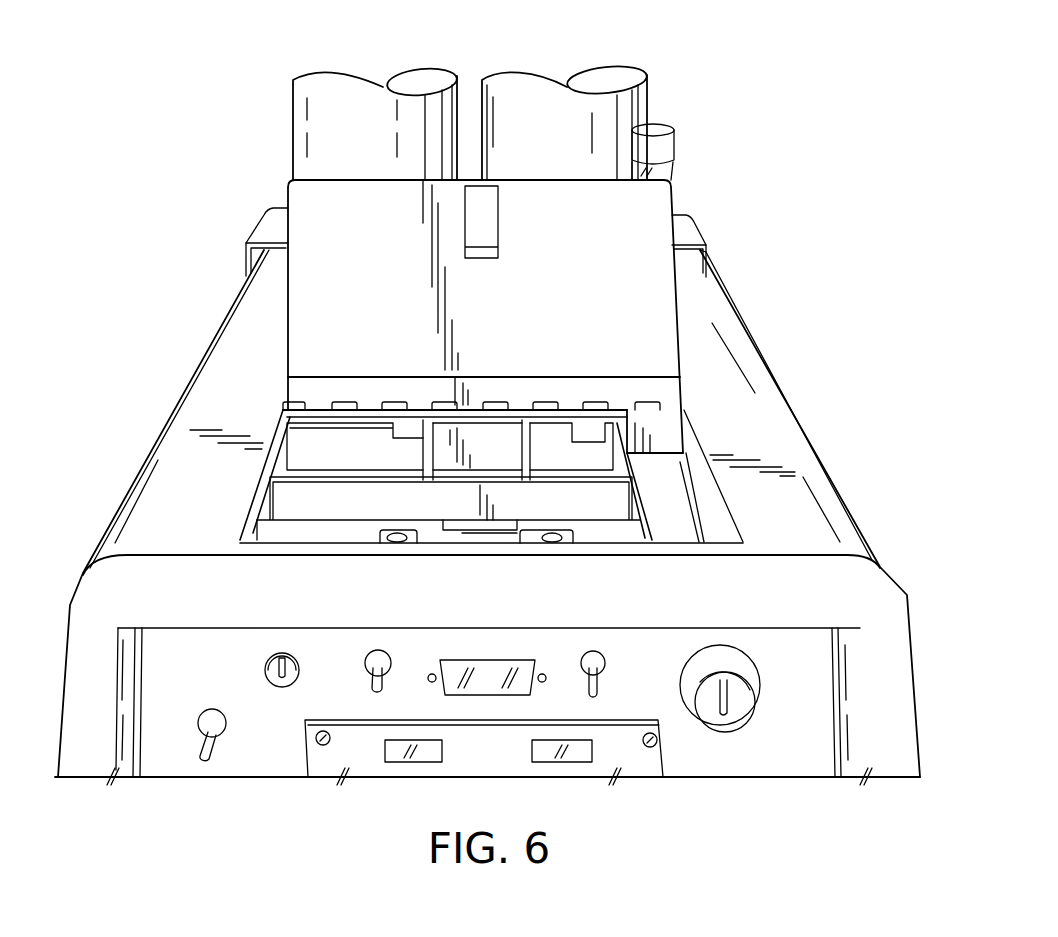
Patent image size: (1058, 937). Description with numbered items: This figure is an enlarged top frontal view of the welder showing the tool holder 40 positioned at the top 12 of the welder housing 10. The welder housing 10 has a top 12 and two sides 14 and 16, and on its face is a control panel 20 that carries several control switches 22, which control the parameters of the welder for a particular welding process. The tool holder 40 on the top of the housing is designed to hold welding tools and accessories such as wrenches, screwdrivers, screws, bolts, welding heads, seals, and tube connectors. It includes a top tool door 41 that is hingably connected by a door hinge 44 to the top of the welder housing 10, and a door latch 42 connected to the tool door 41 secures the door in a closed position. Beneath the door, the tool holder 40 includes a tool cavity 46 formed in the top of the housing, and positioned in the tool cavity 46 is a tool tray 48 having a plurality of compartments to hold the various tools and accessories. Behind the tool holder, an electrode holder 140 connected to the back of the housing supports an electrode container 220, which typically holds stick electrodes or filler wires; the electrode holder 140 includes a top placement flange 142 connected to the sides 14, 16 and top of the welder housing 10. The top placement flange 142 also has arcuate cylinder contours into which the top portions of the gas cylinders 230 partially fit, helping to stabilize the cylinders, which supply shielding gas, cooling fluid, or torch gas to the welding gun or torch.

The welder housing 10 is at (127, 487).
The top 12 is at (710, 347).
The side 14 is at (825, 467).
The side 16 is at (167, 422).
The control panel 20 is at (258, 770).
The control switches 22 is at (383, 665).
The tool holder 40 is at (283, 345).
The top tool door 41 is at (297, 223).
The door latch 42 is at (485, 198).
The door hinge 44 is at (655, 405).
The tool cavity 46 is at (707, 490).
The tool tray 48 is at (303, 447).
The electrode holder 140 is at (712, 252).
The top placement flange 142 is at (683, 228).
The electrode container 220 is at (673, 172).
The gas cylinders 230 is at (500, 90).